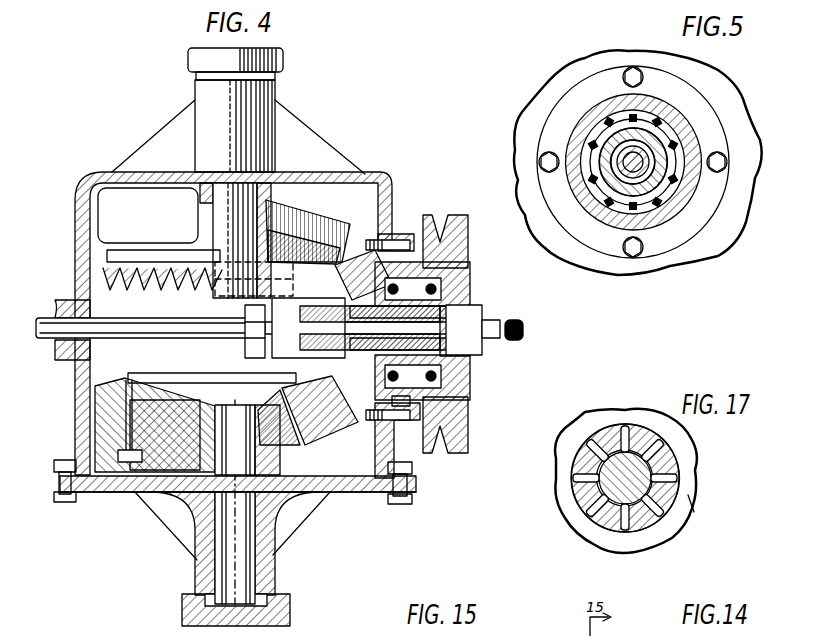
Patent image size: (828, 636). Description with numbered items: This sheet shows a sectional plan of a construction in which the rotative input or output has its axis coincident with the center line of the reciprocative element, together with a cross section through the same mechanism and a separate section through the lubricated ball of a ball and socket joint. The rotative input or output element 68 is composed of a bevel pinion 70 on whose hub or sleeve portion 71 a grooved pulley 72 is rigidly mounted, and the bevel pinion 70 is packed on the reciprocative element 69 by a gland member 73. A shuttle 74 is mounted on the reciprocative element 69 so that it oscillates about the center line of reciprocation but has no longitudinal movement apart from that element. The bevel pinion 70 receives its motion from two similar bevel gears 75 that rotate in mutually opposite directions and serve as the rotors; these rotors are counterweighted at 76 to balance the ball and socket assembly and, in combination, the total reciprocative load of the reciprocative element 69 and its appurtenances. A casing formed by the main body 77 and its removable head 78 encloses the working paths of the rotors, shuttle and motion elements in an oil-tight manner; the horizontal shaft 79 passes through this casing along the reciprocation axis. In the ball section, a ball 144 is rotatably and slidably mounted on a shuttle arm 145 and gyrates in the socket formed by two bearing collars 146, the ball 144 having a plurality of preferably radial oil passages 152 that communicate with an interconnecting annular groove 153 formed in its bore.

In FIG. 4, the rotative input or output element 68 is at (465, 380).
In FIG. 5, the rotative input or output element 68 is at (633, 162).
In FIG. 5, the reciprocative element 69 is at (647, 183).
In FIG. 4, the bevel pinion 70 is at (342, 328).
In FIG. 4, the hub or sleeve portion 71 is at (468, 364).
In FIG. 5, the hub or sleeve portion 71 is at (657, 133).
In FIG. 4, the grooved pulley 72 is at (466, 248).
In FIG. 4, the gland member 73 is at (466, 316).
In FIG. 5, the gland member 73 is at (657, 157).
In FIG. 4, the shuttle 74 is at (254, 279).
In FIG. 4, the bevel gears 75 is at (358, 244).
In FIG. 4, the counterweight 76 is at (117, 200).
In FIG. 4, the main body 77 is at (354, 177).
In FIG. 5, the main body 77 is at (730, 100).
In FIG. 4, the removable head 78 is at (335, 488).
In FIG. 4, the shaft 79 is at (183, 334).
In FIG. 17, the ball 144 is at (677, 460).
In FIG. 17, the shuttle arm 145 is at (593, 540).
In FIG. 17, the bearing collars 146 is at (565, 508).
In FIG. 17, the oil passages 152 is at (626, 414).
In FIG. 17, the annular groove 153 is at (635, 543).